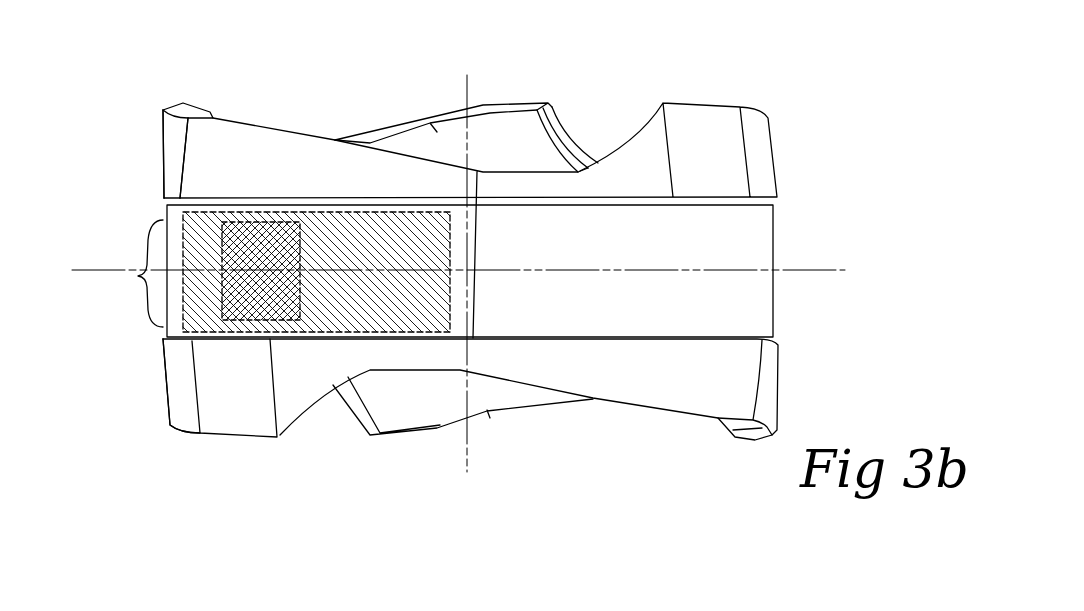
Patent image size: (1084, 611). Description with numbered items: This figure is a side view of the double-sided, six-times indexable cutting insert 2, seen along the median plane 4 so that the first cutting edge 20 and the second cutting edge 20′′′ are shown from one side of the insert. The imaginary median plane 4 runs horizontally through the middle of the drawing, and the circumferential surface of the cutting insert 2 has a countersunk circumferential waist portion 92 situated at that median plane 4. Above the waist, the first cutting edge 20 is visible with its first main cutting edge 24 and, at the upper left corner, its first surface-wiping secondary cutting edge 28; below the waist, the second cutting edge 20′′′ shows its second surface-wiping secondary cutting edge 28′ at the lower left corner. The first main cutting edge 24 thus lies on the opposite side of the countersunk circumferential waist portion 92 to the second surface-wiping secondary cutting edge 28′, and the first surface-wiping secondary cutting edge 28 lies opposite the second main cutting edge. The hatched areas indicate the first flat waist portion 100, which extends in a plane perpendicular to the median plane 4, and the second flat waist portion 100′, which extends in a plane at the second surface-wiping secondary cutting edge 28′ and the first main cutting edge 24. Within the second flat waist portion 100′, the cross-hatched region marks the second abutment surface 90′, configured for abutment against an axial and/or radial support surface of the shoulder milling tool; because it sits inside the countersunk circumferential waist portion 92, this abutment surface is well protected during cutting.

The cutting insert 2 is at (797, 131).
The median plane 4 is at (98, 266).
The first cutting edge 20 is at (140, 105).
The second cutting edge 20′′′ is at (173, 441).
The first main cutting edge 24 is at (331, 137).
The first surface-wiping secondary cutting edge 28 is at (170, 100).
The second surface-wiping secondary cutting edge 28′ is at (224, 441).
The second abutment surface 90′ is at (290, 312).
The countersunk circumferential waist portion 92 is at (357, 296).
The first flat waist portion 100 is at (133, 280).
The second flat waist portion 100′ is at (437, 320).